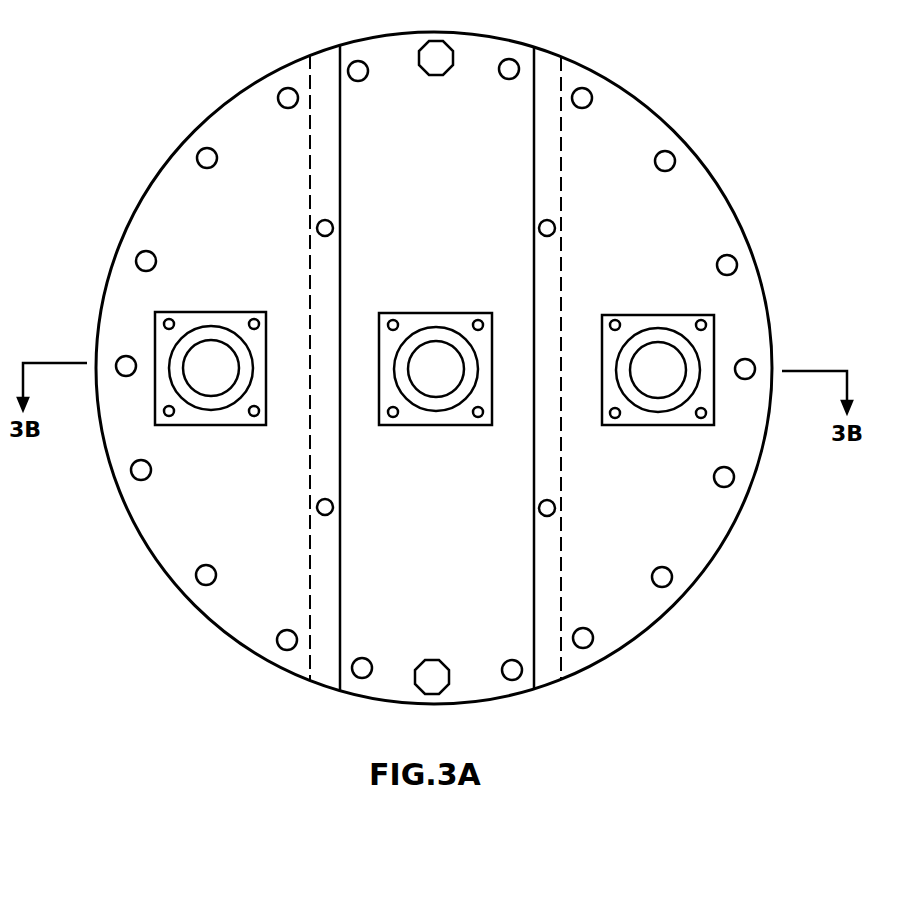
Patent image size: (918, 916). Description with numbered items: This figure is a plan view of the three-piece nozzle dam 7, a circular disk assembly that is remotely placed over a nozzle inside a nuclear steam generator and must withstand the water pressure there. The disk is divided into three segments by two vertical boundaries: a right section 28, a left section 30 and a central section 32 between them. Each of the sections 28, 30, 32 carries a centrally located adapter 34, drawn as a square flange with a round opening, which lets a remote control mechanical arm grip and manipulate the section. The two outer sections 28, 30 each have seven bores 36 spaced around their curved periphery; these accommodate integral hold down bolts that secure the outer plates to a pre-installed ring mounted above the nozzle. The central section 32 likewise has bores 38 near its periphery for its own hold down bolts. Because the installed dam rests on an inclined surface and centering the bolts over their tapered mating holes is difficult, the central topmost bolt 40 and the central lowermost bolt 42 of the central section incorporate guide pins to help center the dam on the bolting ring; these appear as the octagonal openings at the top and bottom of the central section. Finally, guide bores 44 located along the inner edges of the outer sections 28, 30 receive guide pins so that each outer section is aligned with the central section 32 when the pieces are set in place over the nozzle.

The nozzle dam 7 is at (115, 213).
The right section 28 is at (637, 214).
The left section 30 is at (209, 232).
The central section 32 is at (418, 212).
The adapter 34 is at (155, 404).
The bores 36 is at (285, 88).
The bores 38 is at (359, 61).
The central topmost bolt 40 is at (448, 47).
The central lowermost bolt 42 is at (428, 694).
The guide bores 44 is at (318, 235).